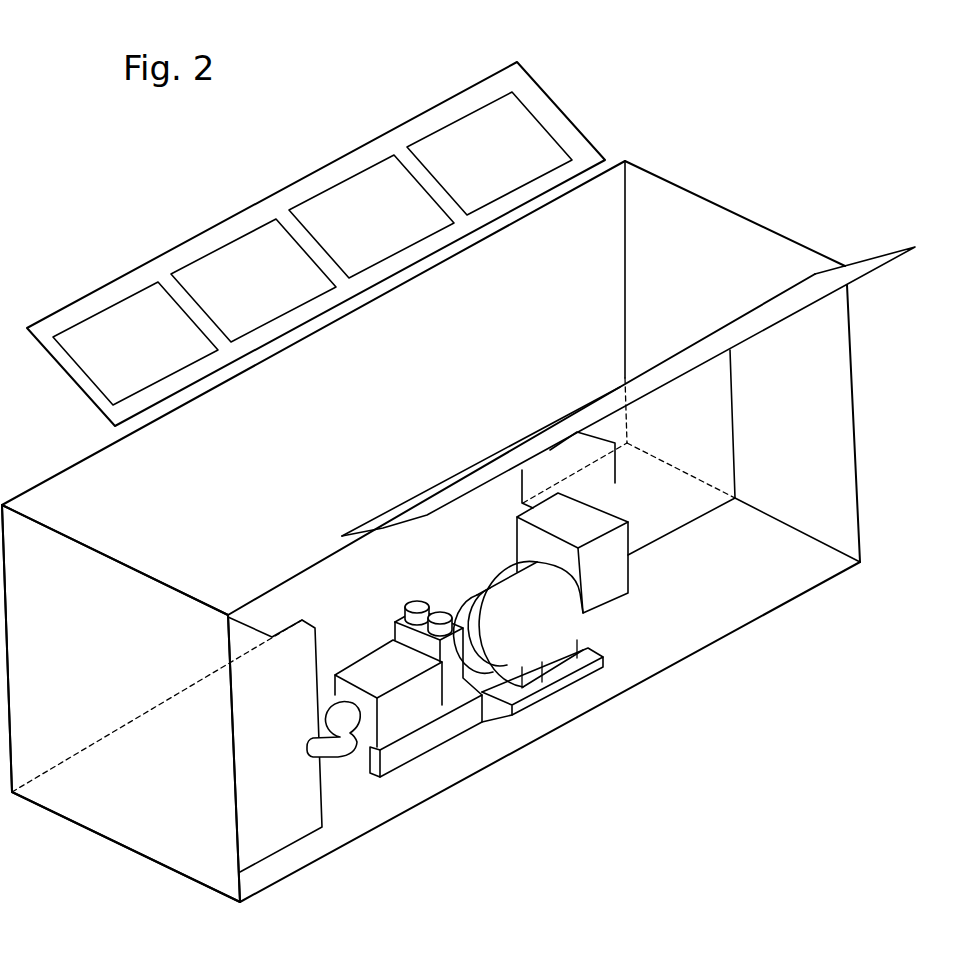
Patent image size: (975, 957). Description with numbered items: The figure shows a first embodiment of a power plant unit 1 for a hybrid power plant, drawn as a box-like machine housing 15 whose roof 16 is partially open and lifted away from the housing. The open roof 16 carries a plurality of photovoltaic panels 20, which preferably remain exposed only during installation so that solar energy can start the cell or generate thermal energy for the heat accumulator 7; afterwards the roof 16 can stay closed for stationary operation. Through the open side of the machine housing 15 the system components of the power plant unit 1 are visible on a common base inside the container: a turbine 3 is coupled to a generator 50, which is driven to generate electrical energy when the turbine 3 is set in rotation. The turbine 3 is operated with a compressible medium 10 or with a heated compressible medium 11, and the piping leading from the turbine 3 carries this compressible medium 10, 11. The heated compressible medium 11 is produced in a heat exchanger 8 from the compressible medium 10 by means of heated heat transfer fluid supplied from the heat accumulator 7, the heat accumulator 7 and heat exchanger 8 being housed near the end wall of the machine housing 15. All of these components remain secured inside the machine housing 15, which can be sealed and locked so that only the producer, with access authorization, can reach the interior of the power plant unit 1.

The power plant unit 1 is at (688, 132).
The turbine 3 is at (413, 703).
The heat accumulator 7 is at (313, 754).
The heat exchanger 8 is at (287, 812).
The compressible medium 10 is at (422, 796).
The heated compressible medium 11 is at (330, 752).
The machine housing 15 is at (108, 673).
The roof 16 is at (316, 225).
The photovoltaic panels 20 is at (470, 148).
The generator 50 is at (545, 618).